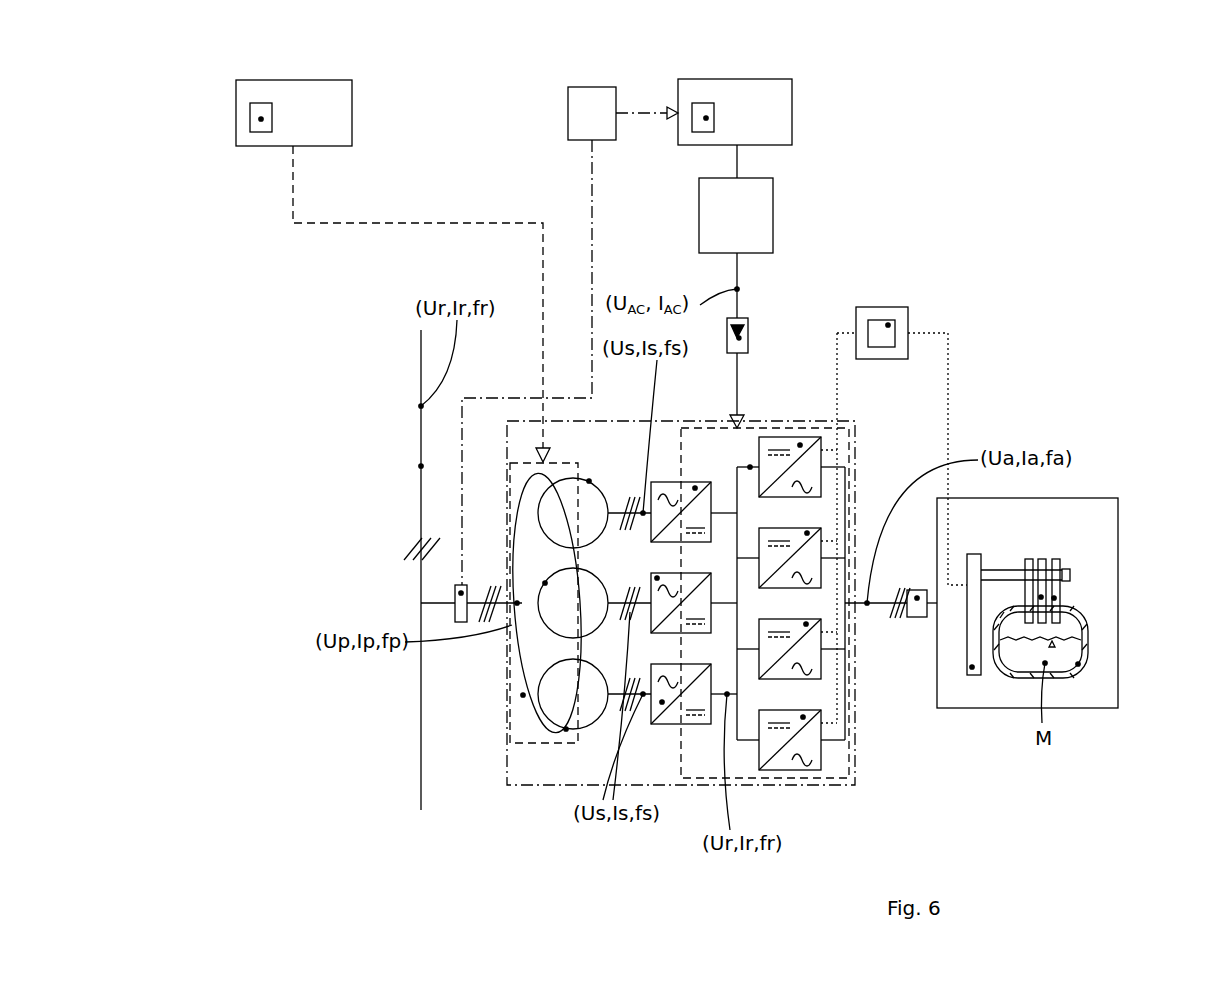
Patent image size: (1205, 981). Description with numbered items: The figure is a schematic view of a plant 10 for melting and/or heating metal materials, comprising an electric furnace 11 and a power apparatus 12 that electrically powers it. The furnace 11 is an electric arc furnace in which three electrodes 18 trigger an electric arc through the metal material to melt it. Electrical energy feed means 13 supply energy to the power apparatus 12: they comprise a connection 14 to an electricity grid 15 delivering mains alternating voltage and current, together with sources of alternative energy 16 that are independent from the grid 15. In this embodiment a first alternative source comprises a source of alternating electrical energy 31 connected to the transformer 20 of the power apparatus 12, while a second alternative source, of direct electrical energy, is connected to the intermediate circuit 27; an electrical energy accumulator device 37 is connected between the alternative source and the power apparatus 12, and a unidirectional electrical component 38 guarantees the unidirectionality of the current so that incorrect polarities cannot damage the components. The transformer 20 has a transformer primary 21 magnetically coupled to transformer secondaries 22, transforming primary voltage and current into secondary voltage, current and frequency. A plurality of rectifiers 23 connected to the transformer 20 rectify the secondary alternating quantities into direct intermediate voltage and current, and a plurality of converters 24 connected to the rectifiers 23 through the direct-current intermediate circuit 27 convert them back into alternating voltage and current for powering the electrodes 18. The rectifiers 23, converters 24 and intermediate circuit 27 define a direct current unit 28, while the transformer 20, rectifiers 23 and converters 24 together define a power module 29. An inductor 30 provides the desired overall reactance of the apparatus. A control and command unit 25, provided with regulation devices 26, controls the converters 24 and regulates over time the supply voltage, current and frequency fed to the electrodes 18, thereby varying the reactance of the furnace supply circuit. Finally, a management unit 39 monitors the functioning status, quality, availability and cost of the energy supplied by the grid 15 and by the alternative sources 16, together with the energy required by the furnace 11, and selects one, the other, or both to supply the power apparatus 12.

The plant 10 is at (190, 80).
The electric furnace 11 is at (1119, 496).
The power apparatus 12 is at (767, 413).
The electrical energy feed means 13 is at (680, 272).
The connection 14 is at (461, 593).
The electricity grid 15 is at (421, 466).
The source of alternative energy 16 is at (514, 112).
The electrodes 18 is at (1041, 597).
The transformer 20 is at (522, 745).
The transformer primary 21 is at (523, 695).
The transformer secondary 22 is at (589, 481).
The rectifiers 23 is at (695, 488).
The converters 24 is at (800, 445).
The control and command unit 25 is at (901, 303).
The regulation devices 26 is at (888, 325).
The intermediate circuit 27 is at (750, 467).
The direct current unit 28 is at (770, 782).
The power module 29 is at (843, 790).
The inductor 30 is at (917, 598).
The source of alternating electrical energy 31 is at (261, 119).
The electrical energy accumulator device 37 is at (736, 199).
The unidirectional electrical component 38 is at (740, 338).
The management unit 39 is at (570, 336).